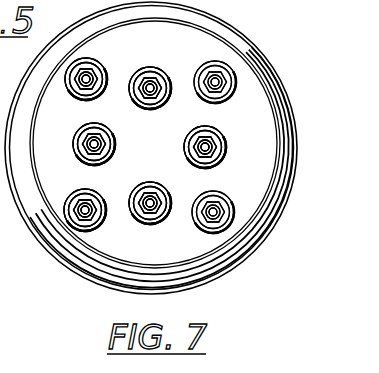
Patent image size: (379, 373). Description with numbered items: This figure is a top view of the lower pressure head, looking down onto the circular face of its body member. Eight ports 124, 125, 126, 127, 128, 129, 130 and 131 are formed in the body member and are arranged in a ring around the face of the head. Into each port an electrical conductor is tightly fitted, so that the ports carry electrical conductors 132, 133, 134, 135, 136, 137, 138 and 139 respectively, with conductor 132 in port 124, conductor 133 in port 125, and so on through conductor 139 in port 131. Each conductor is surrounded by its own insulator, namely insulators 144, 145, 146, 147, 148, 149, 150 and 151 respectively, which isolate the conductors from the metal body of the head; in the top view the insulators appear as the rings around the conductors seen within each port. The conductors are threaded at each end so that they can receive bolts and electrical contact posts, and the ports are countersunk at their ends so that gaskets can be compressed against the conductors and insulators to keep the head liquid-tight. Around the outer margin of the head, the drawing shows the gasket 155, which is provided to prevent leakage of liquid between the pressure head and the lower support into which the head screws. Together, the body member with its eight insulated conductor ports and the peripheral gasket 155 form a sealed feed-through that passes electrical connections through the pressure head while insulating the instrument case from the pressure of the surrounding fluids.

The port 124 is at (114, 147).
The port 125 is at (223, 136).
The port 126 is at (82, 100).
The port 127 is at (173, 68).
The port 128 is at (236, 86).
The port 129 is at (104, 189).
The port 130 is at (181, 199).
The port 131 is at (173, 221).
The electrical conductor 132 is at (97, 140).
The electrical conductor 133 is at (198, 141).
The electrical conductor 134 is at (87, 78).
The electrical conductor 135 is at (149, 87).
The electrical conductor 136 is at (215, 80).
The electrical conductor 137 is at (88, 211).
The electrical conductor 138 is at (148, 204).
The electrical conductor 139 is at (212, 213).
The insulator 144 is at (74, 150).
The insulator 145 is at (227, 148).
The insulator 146 is at (73, 92).
The insulator 147 is at (129, 89).
The insulator 148 is at (168, 92).
The insulator 149 is at (73, 191).
The insulator 150 is at (138, 189).
The insulator 151 is at (210, 183).
The gasket 155 is at (50, 231).